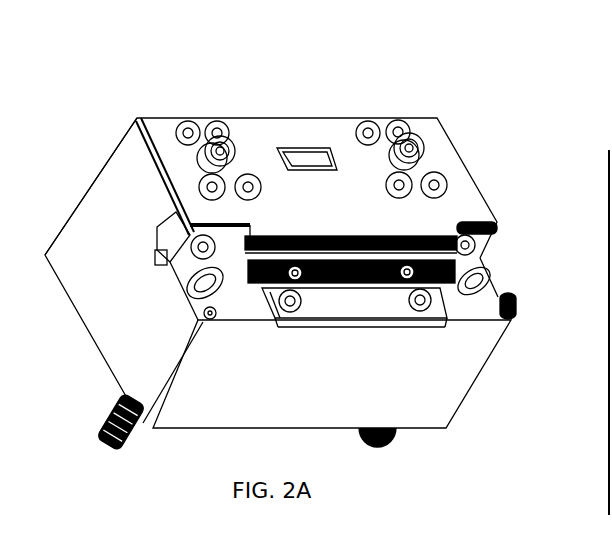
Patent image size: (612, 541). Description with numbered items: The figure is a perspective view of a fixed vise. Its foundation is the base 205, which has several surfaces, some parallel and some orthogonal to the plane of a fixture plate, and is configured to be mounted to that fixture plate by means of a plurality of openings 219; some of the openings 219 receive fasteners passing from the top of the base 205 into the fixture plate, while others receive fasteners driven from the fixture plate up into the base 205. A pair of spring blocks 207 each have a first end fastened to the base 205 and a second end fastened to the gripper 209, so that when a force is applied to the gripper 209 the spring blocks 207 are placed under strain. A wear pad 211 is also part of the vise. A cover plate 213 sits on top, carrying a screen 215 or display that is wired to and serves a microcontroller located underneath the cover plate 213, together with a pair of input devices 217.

The base 205 is at (342, 386).
The spring block 207 is at (163, 227).
The gripper 209 is at (473, 253).
The wear pad 211 is at (371, 309).
The cover plate 213 is at (338, 216).
The screen 215 is at (277, 147).
The input device 217 is at (175, 118).
The opening 219 is at (203, 297).